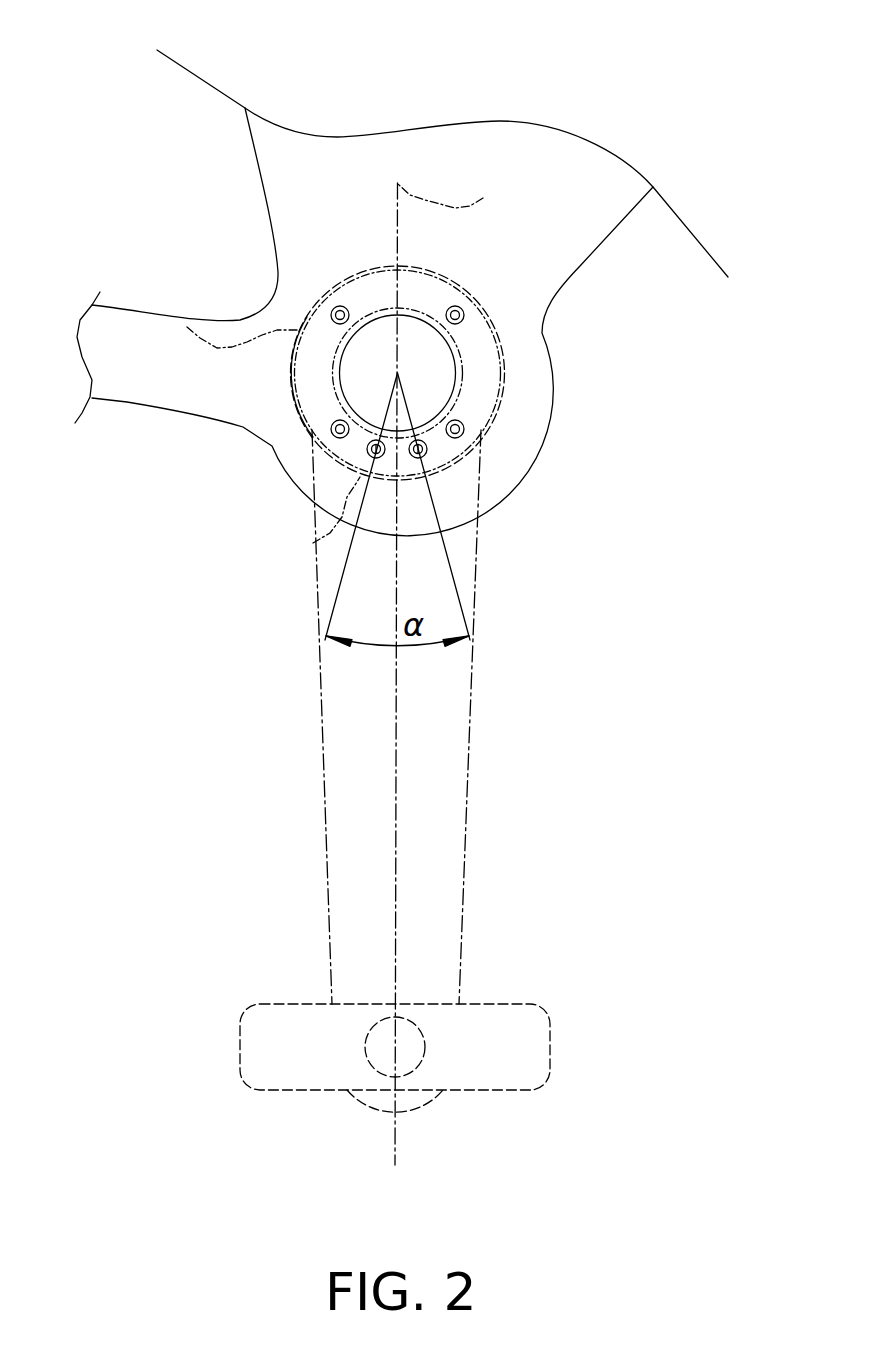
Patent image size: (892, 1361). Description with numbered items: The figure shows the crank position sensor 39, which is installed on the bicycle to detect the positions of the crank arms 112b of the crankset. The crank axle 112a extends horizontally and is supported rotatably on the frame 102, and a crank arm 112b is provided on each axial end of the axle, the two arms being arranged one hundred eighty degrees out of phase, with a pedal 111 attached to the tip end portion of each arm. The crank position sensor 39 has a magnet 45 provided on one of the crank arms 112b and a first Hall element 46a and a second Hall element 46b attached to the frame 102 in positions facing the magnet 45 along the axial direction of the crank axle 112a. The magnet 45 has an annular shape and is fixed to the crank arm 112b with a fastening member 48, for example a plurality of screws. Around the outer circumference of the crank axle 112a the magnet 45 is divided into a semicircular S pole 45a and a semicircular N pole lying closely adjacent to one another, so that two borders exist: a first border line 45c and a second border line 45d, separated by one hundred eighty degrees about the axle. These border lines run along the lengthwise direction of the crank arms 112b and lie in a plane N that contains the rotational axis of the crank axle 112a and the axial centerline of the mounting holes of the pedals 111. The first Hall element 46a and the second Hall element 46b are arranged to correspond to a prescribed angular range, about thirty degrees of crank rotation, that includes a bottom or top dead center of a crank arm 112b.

The crank position sensor 39 is at (401, 213).
The magnet 45 is at (327, 298).
The S pole 45a is at (183, 327).
The first border line 45c is at (313, 543).
The second border line 45d is at (483, 198).
The first Hall element 46a is at (260, 463).
The second Hall element 46b is at (519, 476).
The fastening member 48 is at (368, 290).
The frame 102 is at (453, 361).
The pedal 111 is at (430, 1082).
The crank axle 112a is at (544, 373).
The crank arm 112b is at (517, 717).
The plane N is at (492, 720).